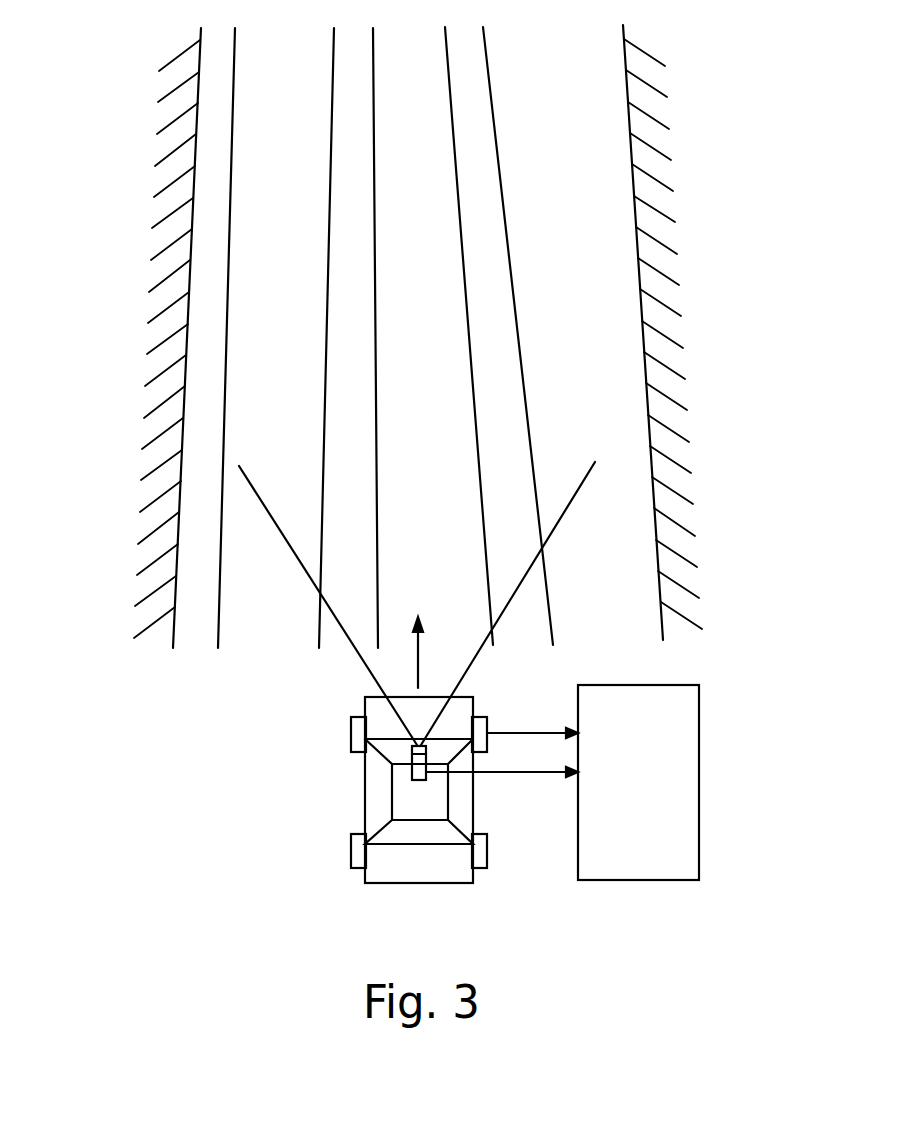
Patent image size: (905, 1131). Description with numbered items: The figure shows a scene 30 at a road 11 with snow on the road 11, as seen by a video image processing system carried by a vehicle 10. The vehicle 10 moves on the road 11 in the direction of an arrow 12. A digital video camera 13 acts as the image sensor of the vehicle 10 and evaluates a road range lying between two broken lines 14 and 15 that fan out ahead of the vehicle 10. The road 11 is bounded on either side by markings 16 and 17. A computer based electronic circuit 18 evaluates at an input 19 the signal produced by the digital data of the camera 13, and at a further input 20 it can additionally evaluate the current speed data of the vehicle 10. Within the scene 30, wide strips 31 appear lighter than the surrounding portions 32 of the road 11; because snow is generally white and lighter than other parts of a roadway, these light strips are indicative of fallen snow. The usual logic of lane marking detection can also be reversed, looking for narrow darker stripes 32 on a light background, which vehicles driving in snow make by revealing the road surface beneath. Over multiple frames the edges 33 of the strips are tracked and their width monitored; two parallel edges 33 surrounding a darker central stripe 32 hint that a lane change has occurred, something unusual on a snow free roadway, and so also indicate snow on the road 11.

The vehicle 10 is at (400, 806).
The road 11 is at (595, 205).
The arrow 12 is at (437, 652).
The digital video camera 13 is at (412, 770).
The broken line 14 is at (301, 565).
The broken line 15 is at (557, 525).
The marking 16 is at (190, 257).
The marking 17 is at (638, 240).
The computer based electronic circuit 18 is at (670, 685).
The input 19 is at (518, 733).
The input 20 is at (557, 772).
The scene 30 is at (284, 108).
The wide strips 31 is at (262, 238).
The stripes 32 is at (347, 340).
The edges 33 is at (480, 450).